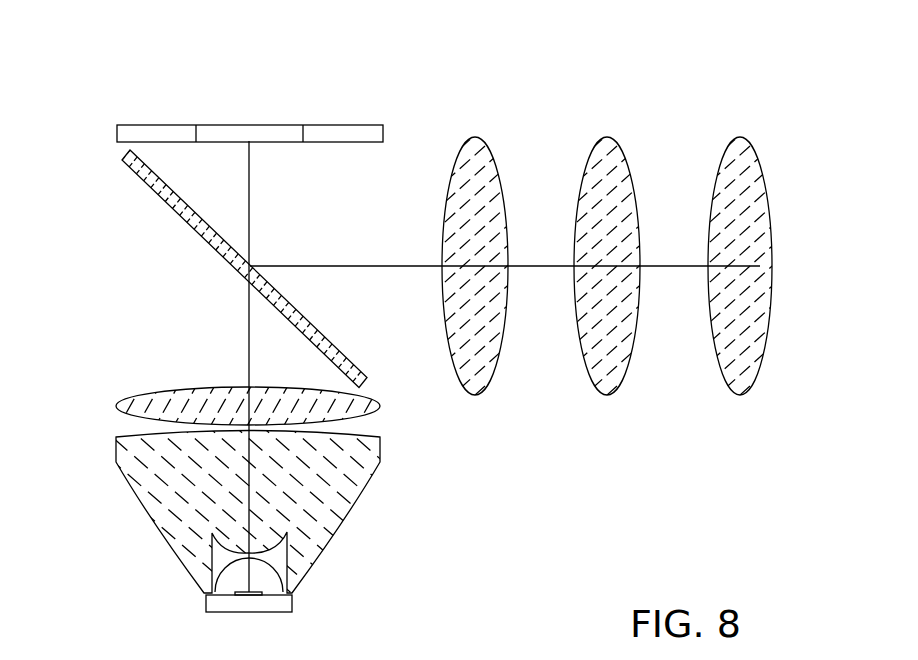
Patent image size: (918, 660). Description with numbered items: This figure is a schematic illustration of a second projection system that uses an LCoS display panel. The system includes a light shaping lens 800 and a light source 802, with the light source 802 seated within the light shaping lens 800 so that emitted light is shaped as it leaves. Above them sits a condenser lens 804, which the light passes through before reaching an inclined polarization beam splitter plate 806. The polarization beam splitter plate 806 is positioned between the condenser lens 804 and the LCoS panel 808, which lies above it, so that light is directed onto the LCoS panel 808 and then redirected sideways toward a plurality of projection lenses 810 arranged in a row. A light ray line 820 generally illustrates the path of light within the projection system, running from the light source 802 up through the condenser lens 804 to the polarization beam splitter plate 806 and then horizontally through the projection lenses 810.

The light shaping lens 800 is at (160, 540).
The light source 802 is at (263, 613).
The condenser lens 804 is at (120, 402).
The polarization beam splitter plate 806 is at (175, 213).
The LCoS panel 808 is at (217, 125).
The projection lenses 810 is at (475, 137).
The light ray line 820 is at (664, 262).